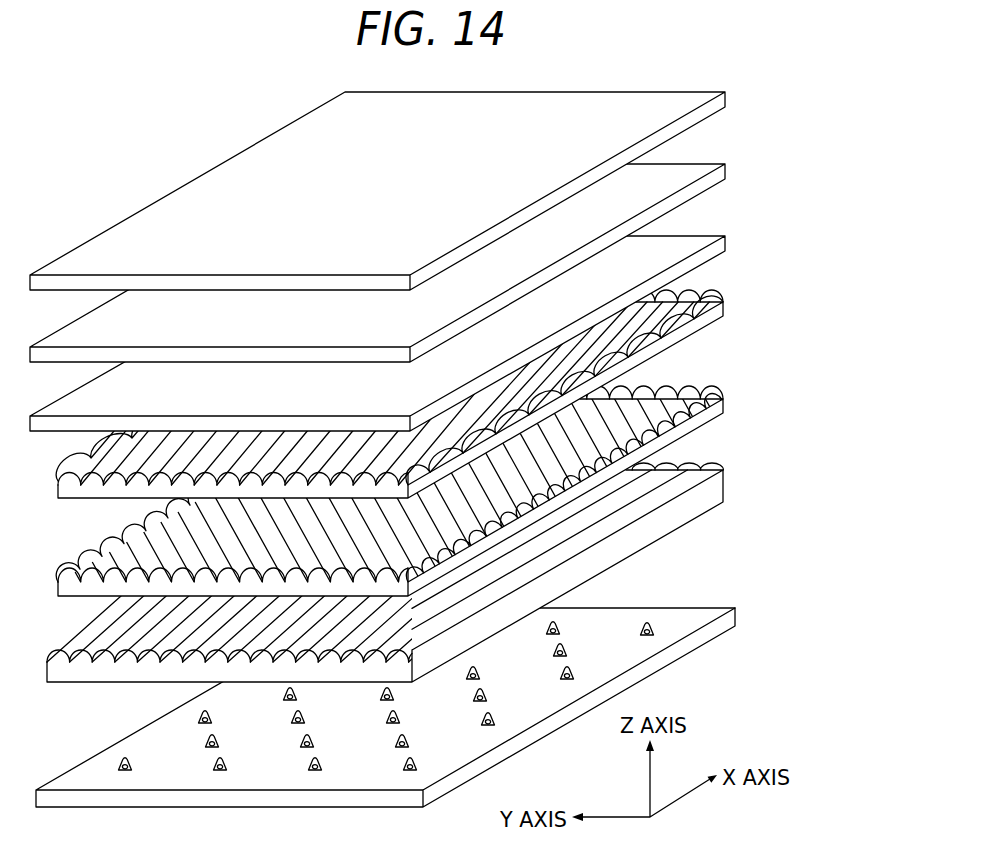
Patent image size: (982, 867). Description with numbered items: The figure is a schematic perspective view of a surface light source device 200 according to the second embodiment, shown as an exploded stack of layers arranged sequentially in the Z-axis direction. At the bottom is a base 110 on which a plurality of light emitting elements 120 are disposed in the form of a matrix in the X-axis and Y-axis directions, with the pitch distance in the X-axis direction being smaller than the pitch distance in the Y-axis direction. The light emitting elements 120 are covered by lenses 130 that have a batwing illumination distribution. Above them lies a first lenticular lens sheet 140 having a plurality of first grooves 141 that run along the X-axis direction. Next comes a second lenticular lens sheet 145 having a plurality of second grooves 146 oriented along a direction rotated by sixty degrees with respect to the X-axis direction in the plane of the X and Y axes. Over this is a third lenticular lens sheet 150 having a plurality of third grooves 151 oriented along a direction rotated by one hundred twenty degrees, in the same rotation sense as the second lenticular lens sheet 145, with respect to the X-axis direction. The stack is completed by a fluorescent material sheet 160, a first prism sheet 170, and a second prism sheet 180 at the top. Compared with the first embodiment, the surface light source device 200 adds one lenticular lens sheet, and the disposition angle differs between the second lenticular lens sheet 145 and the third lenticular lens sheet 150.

The surface light source device 200 is at (660, 72).
The second prism sheet 180 is at (727, 102).
The first prism sheet 170 is at (727, 172).
The fluorescent material sheet 160 is at (727, 242).
The third grooves 151 is at (607, 342).
The third lenticular lens sheet 150 is at (453, 394).
The second grooves 146 is at (617, 435).
The second lenticular lens sheet 145 is at (427, 445).
The first grooves 141 is at (600, 533).
The first lenticular lens sheet 140 is at (455, 572).
The lenses 130 is at (650, 622).
The light emitting elements 120 is at (655, 631).
The base 110 is at (453, 693).